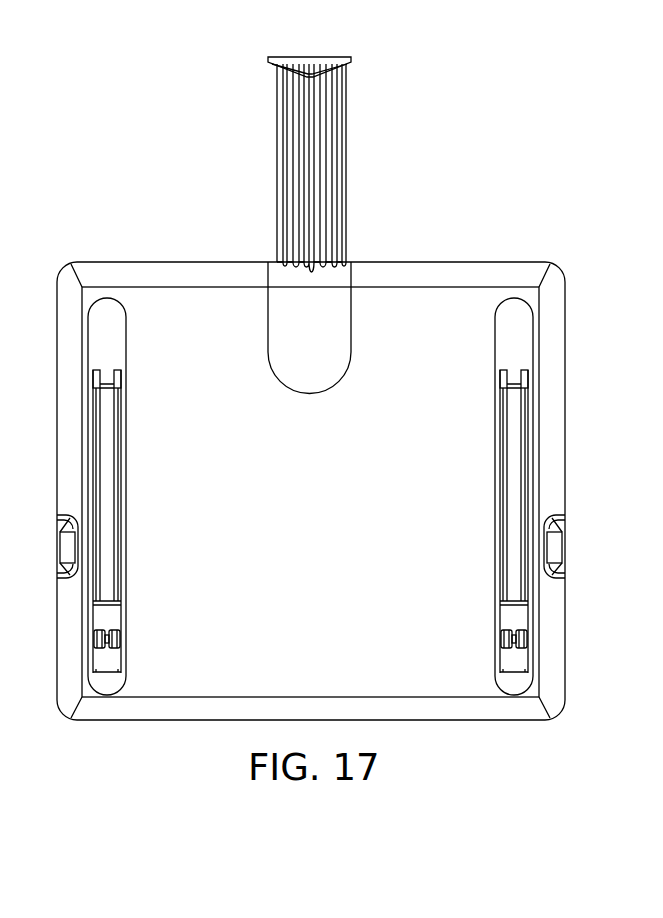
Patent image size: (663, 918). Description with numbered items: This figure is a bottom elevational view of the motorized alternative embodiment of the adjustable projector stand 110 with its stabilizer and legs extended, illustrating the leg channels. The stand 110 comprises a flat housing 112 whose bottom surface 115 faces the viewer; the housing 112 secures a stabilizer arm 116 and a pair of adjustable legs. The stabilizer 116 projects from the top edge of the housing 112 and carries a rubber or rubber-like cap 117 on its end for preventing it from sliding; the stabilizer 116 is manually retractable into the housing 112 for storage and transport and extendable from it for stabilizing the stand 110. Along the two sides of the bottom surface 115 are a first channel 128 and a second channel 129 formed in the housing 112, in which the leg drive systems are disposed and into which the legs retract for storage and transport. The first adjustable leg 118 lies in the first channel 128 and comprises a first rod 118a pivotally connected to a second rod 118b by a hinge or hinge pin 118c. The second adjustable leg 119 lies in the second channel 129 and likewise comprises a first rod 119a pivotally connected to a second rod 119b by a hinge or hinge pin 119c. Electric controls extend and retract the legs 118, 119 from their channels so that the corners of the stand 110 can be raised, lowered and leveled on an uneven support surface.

The projector stand 110 is at (143, 166).
The flat housing 112 is at (446, 262).
The bottom surface 115 is at (330, 500).
The stabilizer arm 116 is at (332, 157).
The cap 117 is at (340, 57).
The first adjustable leg 118 is at (478, 661).
The first rod 118a is at (522, 664).
The second rod 118b is at (520, 622).
The hinge pin 118c is at (522, 641).
The second adjustable leg 119 is at (128, 631).
The first rod 119a is at (97, 663).
The second rod 119b is at (97, 622).
The hinge pin 119c is at (97, 641).
The first channel 128 is at (520, 327).
The second channel 129 is at (99, 326).